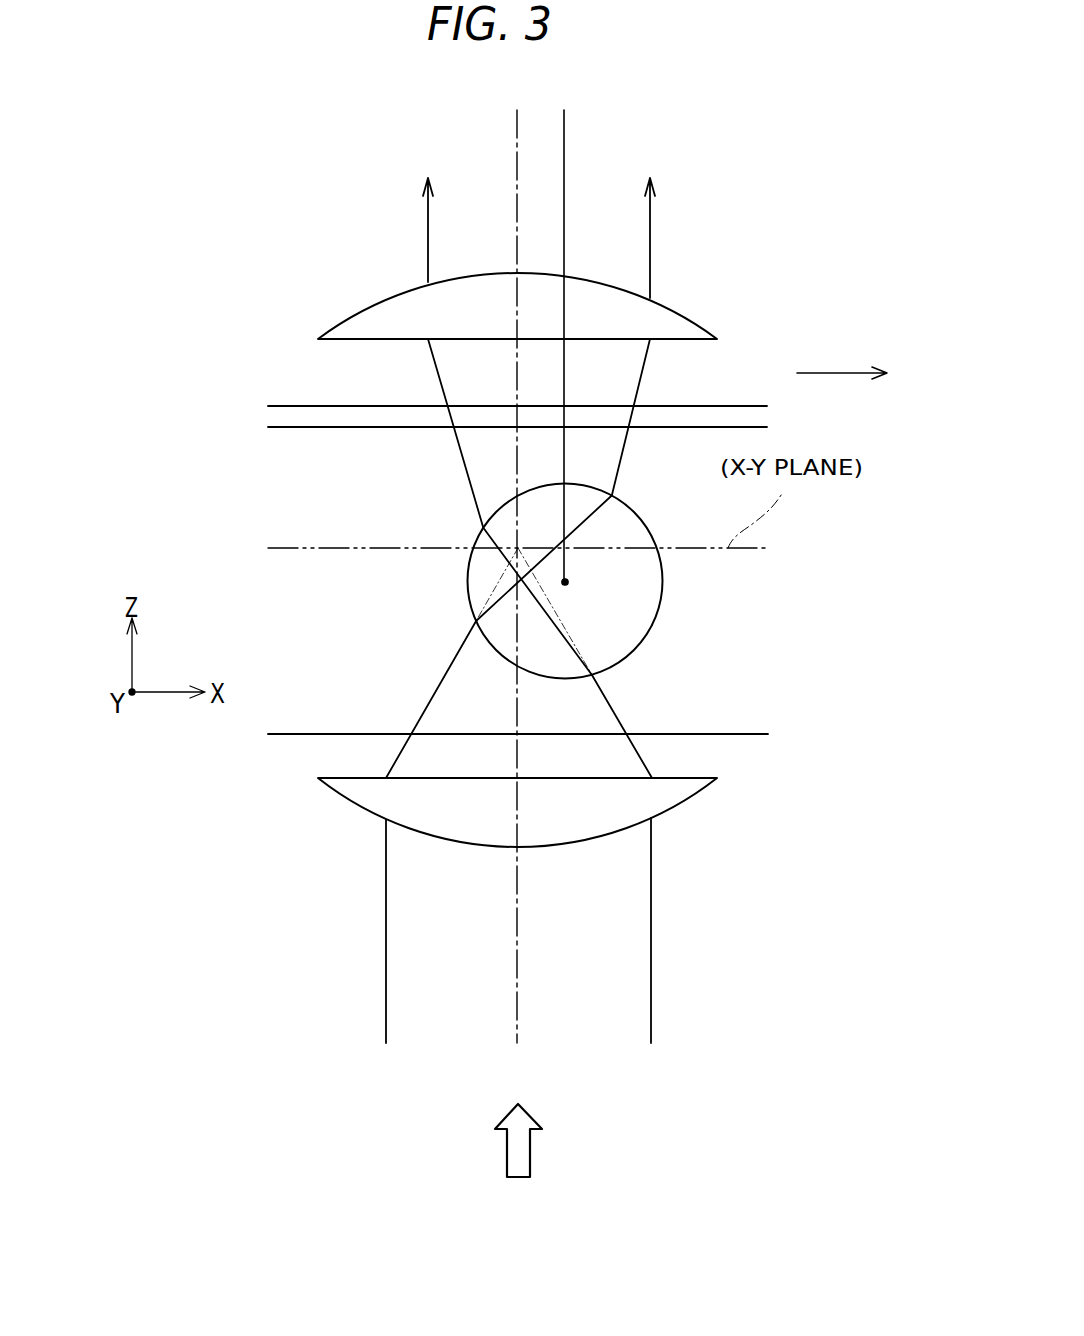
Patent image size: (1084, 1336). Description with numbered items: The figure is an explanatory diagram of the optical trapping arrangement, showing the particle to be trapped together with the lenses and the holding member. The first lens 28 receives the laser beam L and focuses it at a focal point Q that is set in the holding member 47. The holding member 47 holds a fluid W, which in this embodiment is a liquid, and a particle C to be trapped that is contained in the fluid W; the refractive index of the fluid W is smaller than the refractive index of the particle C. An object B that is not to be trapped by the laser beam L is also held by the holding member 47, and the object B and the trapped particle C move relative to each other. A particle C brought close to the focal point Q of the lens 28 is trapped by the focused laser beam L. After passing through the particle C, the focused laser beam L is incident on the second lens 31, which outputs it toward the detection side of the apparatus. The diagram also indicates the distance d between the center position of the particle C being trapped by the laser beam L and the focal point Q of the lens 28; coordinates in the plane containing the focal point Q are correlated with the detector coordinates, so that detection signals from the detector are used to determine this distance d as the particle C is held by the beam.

The second lens 31 is at (687, 318).
The first lens 28 is at (363, 808).
The holding member 47 is at (739, 734).
The object B is at (353, 430).
The particle C is at (652, 623).
The laser beam L is at (651, 253).
The focal point Q is at (520, 546).
The fluid W is at (349, 712).
The distance d is at (472, 115).